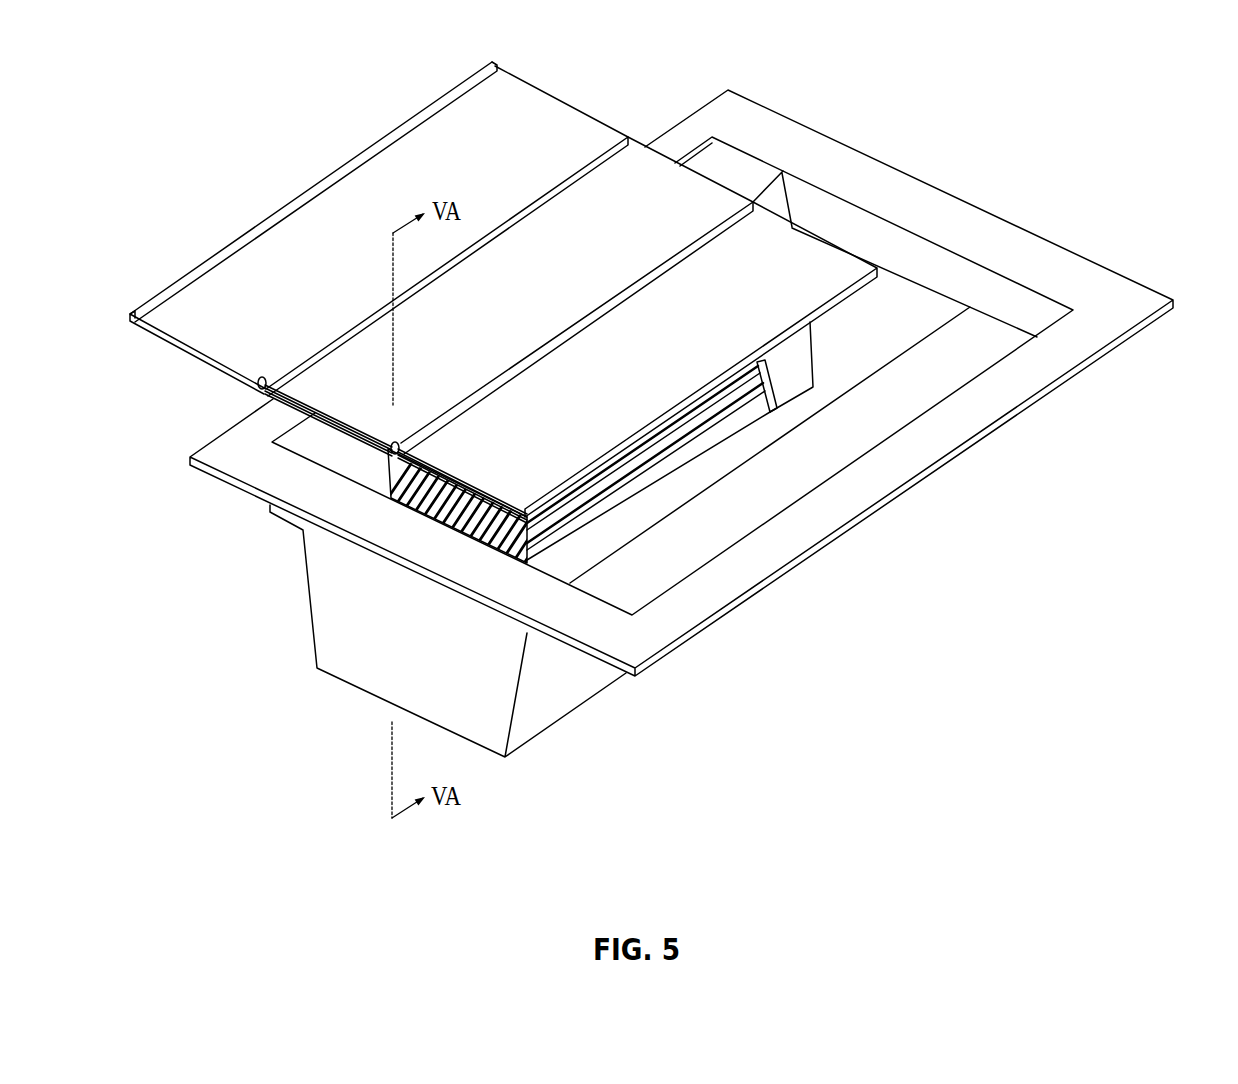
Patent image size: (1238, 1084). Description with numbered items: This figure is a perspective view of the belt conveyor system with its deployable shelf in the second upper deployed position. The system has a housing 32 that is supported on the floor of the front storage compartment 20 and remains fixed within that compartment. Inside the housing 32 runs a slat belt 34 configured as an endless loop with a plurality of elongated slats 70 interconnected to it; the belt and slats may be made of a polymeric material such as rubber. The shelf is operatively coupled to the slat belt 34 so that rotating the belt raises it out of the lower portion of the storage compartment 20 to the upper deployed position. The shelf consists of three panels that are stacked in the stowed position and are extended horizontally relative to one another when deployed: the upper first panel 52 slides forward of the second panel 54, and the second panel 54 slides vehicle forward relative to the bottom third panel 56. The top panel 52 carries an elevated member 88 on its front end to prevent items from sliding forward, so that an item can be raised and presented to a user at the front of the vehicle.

The front storage compartment 20 is at (925, 290).
The housing 32 is at (830, 265).
The slat belt 34 is at (767, 378).
The top panel 52 is at (553, 118).
The second panel 54 is at (707, 197).
The third panel 56 is at (780, 202).
The slats 70 is at (650, 443).
The elevated member 88 is at (217, 250).